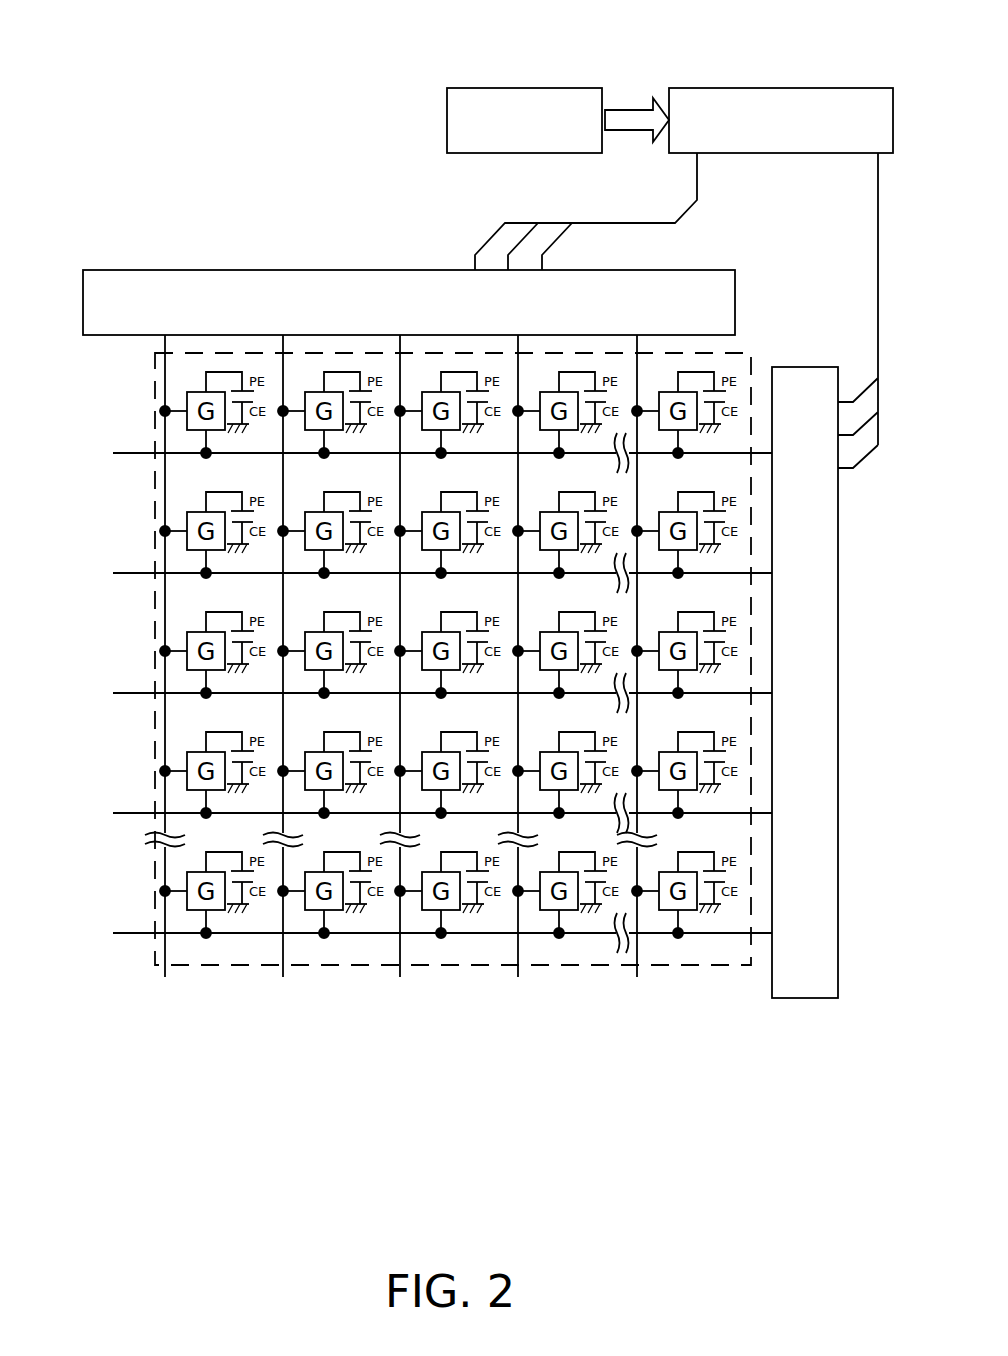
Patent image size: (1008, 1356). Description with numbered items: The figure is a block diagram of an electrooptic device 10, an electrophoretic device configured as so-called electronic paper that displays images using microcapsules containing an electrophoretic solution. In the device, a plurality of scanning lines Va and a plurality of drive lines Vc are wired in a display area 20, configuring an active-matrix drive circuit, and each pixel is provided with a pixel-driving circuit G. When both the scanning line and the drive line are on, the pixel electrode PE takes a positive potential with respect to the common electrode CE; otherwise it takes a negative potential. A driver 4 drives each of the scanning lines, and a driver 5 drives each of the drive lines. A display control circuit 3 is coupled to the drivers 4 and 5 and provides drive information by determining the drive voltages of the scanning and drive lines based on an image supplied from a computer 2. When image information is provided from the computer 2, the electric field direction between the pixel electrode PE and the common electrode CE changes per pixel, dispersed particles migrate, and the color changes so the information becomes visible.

The computer 2 is at (520, 88).
The display control circuit 3 is at (725, 88).
The driver 4 is at (812, 998).
The driver 5 is at (300, 270).
The electrooptic device 10 is at (448, 727).
The display area 20 is at (155, 965).